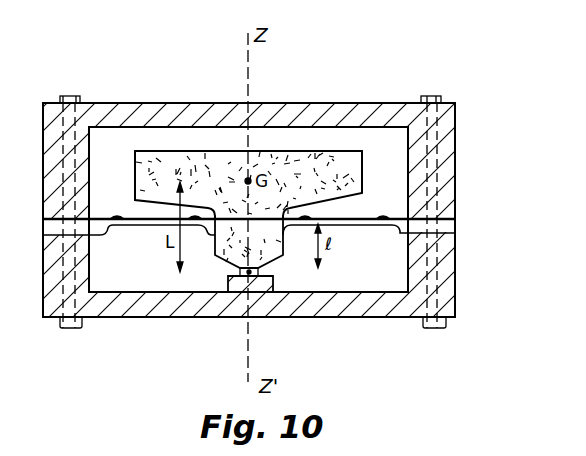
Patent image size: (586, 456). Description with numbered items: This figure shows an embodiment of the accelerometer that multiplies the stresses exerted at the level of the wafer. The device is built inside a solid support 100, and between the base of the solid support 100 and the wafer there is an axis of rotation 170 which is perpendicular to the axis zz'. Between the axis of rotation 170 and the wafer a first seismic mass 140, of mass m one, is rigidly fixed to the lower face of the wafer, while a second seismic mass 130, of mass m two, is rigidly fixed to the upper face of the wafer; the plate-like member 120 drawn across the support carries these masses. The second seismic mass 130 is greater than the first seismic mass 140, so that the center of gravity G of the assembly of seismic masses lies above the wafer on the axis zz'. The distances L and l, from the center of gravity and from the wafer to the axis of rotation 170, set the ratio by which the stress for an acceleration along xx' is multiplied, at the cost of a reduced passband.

The solid support 100 is at (447, 153).
The plate 120 is at (450, 220).
The second seismic mass 130 is at (338, 158).
The first seismic mass 140 is at (277, 256).
The axis of rotation 170 is at (246, 277).